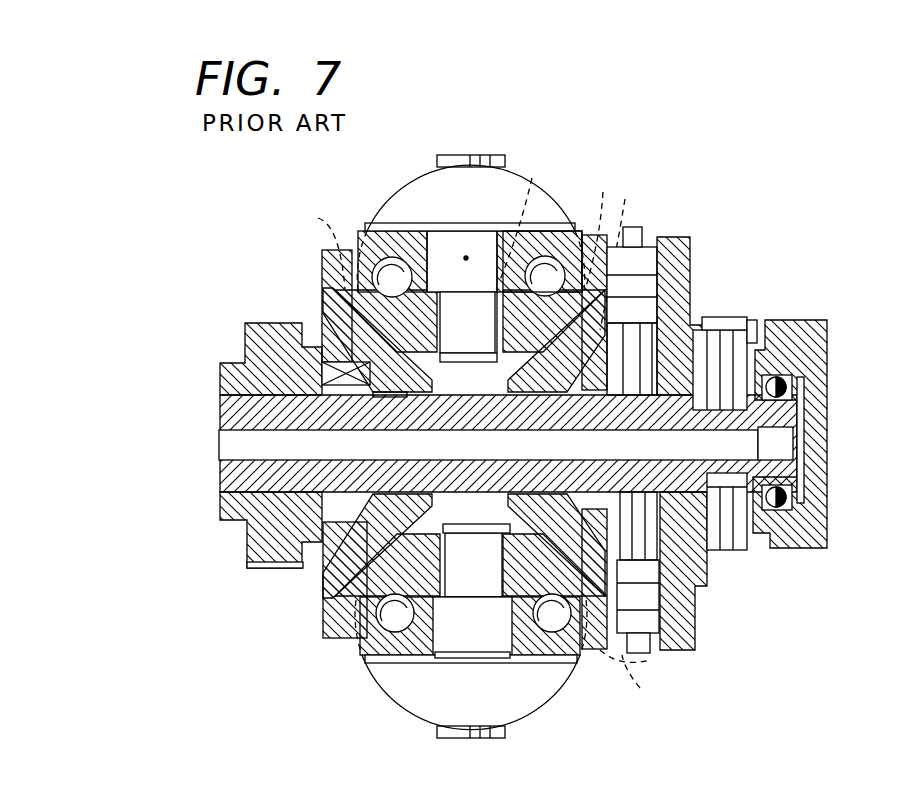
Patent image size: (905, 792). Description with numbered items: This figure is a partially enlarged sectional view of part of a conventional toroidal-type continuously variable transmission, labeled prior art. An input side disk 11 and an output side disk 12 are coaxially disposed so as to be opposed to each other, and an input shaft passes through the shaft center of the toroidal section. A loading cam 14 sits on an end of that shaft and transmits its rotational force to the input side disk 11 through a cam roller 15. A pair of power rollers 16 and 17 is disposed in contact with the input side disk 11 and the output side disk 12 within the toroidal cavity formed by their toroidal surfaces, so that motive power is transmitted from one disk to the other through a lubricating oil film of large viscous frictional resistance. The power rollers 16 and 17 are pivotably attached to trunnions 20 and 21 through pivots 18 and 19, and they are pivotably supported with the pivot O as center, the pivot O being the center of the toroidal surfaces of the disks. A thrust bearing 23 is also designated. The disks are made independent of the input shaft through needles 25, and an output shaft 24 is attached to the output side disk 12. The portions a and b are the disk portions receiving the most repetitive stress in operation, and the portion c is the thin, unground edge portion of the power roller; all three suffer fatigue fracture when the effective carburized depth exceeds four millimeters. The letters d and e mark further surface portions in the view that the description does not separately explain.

The input side disk 11 is at (625, 250).
The output side disk 12 is at (332, 265).
The loading cam 14 is at (687, 633).
The cam roller 15 is at (652, 627).
The power roller 16 is at (348, 312).
The power roller 17 is at (570, 663).
The pivot 18 is at (446, 250).
The pivot 19 is at (440, 658).
The trunnion 20 is at (540, 232).
The trunnion 21 is at (367, 650).
The thrust bearing 23 is at (392, 257).
The output shaft 24 is at (245, 368).
The needles 25 is at (327, 558).
The pivot O is at (467, 255).
The portion a is at (600, 226).
The portion b is at (627, 678).
The portion c is at (524, 215).
The spherical surface d is at (618, 251).
The spherical surface e is at (320, 244).